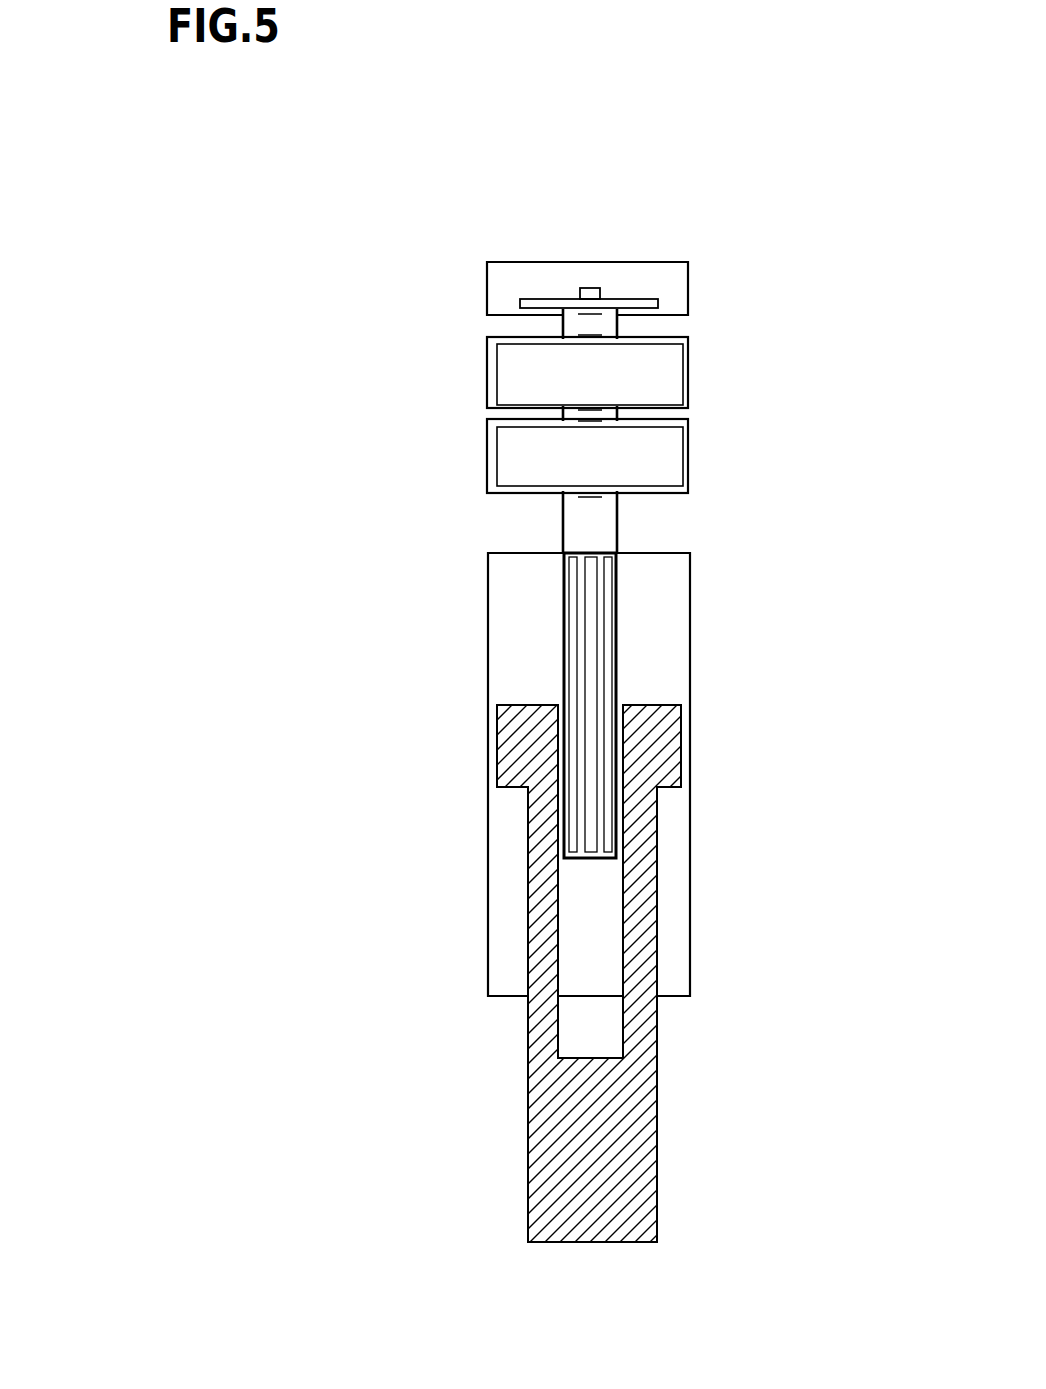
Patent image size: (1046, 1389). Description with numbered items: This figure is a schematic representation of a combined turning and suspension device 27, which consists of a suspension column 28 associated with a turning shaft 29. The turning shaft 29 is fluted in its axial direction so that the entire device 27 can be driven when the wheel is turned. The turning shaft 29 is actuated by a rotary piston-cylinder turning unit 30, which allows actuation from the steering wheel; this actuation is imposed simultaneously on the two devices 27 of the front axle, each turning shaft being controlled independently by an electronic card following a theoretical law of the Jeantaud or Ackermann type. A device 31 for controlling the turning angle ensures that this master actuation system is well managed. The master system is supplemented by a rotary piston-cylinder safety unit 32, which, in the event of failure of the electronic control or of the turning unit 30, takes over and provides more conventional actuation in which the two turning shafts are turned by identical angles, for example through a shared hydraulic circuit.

The combined turning and suspension device 27 is at (292, 487).
The suspension column 28 is at (627, 1133).
The turning shaft 29 is at (600, 635).
The rotary piston-cylinder turning unit 30 is at (667, 455).
The device for controlling the turning angle 31 is at (642, 273).
The rotary piston-cylinder safety unit 32 is at (663, 377).